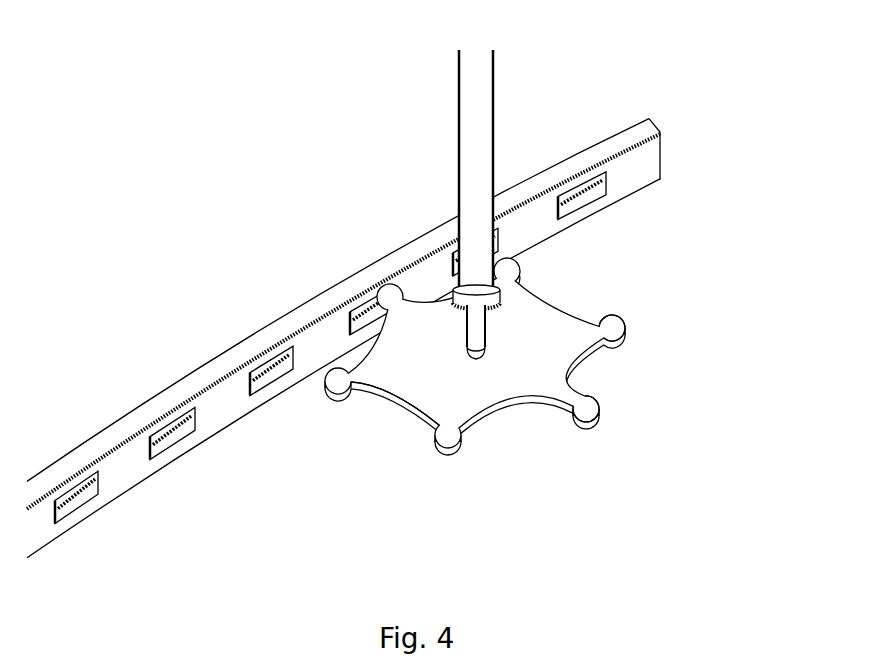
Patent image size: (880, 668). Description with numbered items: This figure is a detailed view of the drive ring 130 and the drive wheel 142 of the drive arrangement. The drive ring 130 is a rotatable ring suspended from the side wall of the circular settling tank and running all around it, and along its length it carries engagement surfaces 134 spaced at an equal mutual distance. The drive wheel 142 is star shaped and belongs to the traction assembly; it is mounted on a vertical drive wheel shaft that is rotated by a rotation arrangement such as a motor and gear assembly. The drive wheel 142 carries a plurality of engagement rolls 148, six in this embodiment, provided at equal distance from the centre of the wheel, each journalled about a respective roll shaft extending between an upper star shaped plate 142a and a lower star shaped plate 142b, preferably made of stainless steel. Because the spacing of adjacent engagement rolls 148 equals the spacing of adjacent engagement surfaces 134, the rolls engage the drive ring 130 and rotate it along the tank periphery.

The drive ring 130 is at (170, 381).
The engagement surfaces 134 is at (99, 501).
The drive wheel 142 is at (497, 383).
The upper star shaped plate 142a is at (380, 400).
The lower star shaped plate 142b is at (422, 423).
The engagement rolls 148 is at (612, 418).